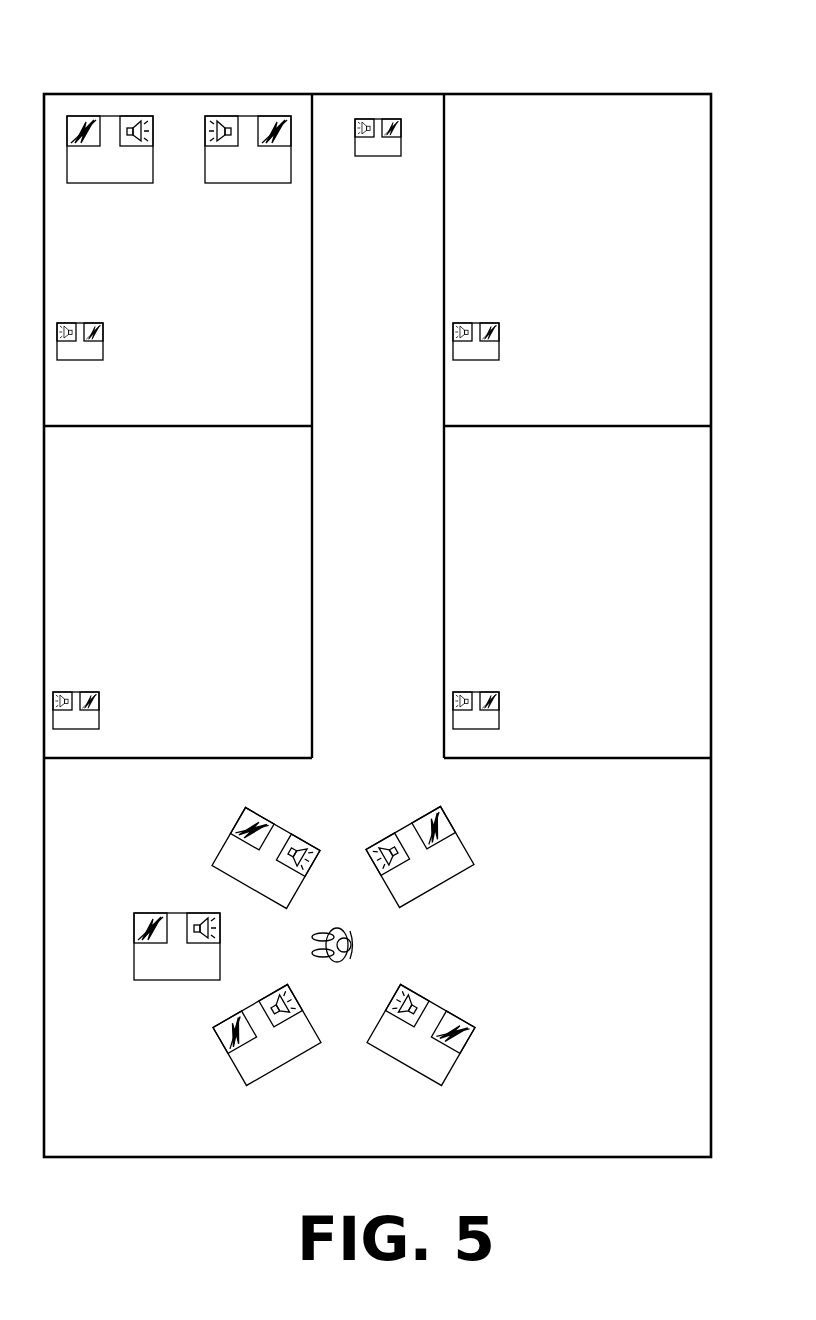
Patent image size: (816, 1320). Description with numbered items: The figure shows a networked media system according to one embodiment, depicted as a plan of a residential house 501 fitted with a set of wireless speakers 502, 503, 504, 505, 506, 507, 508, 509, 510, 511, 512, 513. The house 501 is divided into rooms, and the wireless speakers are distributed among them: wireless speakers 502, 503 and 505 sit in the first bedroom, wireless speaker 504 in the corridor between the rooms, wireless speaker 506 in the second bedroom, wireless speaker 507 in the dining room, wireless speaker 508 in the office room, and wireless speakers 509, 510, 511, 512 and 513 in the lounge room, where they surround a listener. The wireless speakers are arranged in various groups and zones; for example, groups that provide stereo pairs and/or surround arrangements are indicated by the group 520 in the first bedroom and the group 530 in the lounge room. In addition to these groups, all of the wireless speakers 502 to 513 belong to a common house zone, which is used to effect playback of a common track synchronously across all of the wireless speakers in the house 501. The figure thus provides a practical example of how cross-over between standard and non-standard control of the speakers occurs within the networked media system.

The residential house 501 is at (142, 46).
The wireless speaker 502 is at (78, 184).
The wireless speaker 503 is at (216, 184).
The wireless speaker 504 is at (377, 156).
The wireless speaker 505 is at (80, 361).
The wireless speaker 506 is at (475, 323).
The wireless speaker 507 is at (76, 692).
The wireless speaker 508 is at (476, 692).
The wireless speaker 509 is at (235, 836).
The wireless speaker 510 is at (453, 834).
The wireless speaker 511 is at (180, 912).
The wireless speaker 512 is at (285, 1063).
The wireless speaker 513 is at (455, 1052).
The speaker group 520 is at (156, 252).
The speaker group 530 is at (483, 948).